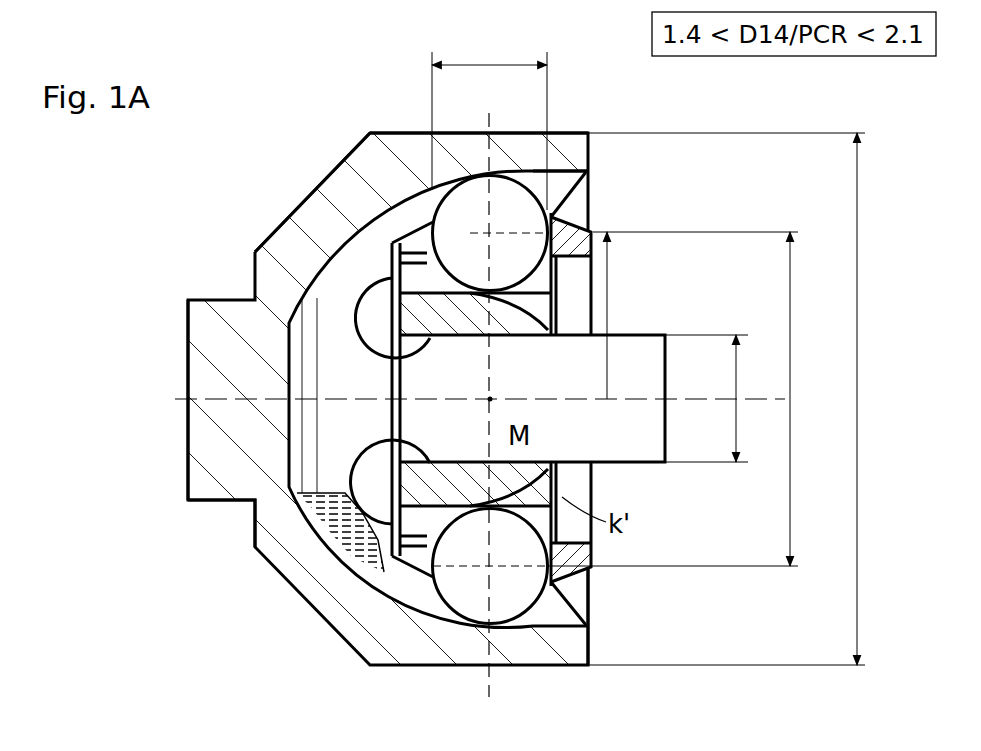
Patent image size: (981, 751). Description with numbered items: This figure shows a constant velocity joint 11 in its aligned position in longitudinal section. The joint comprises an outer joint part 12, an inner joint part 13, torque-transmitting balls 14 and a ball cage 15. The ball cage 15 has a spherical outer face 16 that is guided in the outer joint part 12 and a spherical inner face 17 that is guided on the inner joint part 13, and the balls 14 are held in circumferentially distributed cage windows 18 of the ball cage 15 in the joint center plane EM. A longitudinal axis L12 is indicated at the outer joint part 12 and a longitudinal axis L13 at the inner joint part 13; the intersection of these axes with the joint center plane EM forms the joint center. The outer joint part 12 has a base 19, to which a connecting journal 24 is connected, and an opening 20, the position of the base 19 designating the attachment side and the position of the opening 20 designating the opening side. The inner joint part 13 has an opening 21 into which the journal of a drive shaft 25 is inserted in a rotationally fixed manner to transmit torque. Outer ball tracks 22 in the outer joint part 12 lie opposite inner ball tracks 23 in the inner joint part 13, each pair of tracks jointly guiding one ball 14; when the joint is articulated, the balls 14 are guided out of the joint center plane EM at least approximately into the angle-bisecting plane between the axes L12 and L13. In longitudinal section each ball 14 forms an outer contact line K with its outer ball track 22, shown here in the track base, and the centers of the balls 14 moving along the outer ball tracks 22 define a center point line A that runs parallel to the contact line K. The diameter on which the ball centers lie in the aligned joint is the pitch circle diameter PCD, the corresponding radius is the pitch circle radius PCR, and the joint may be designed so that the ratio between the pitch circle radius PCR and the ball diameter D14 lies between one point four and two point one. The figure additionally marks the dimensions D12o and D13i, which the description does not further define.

The constant velocity joint 11 is at (126, 300).
The outer joint part 12 is at (578, 124).
The inner joint part 13 is at (522, 503).
The torque transmitting balls 14 is at (470, 195).
The ball cage 15 is at (593, 548).
The spherical outer face 16 is at (440, 113).
The spherical inner face 17 is at (385, 577).
The cage windows 18 is at (440, 575).
The base 19 is at (293, 240).
The opening 20 is at (598, 600).
The opening 21 is at (392, 349).
The outer ball tracks 22 is at (417, 207).
The inner ball tracks 23 is at (417, 557).
The connecting journal 24 is at (214, 516).
The drive shaft 25 is at (428, 427).
The longitudinal axis L12 is at (220, 395).
The longitudinal axis L13 is at (677, 305).
The ball diameter D14 is at (489, 114).
The outer diameter of outer joint part D12o is at (726, 399).
The inner diameter of inner joint part D13i is at (706, 398).
The pitch circle radius PCR is at (647, 315).
The pitch circle diameter PCD is at (673, 399).
The joint center plane EM is at (489, 688).
The center point line A is at (510, 230).
The outer contact line K is at (553, 617).